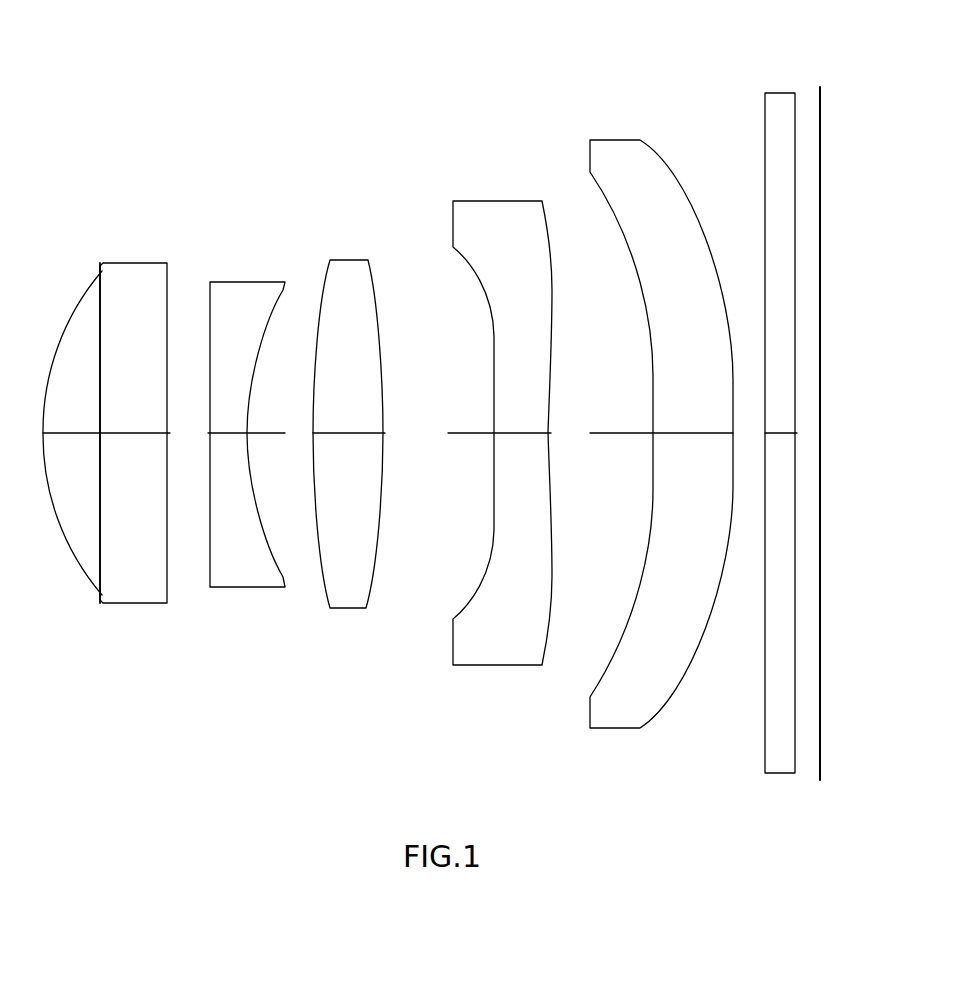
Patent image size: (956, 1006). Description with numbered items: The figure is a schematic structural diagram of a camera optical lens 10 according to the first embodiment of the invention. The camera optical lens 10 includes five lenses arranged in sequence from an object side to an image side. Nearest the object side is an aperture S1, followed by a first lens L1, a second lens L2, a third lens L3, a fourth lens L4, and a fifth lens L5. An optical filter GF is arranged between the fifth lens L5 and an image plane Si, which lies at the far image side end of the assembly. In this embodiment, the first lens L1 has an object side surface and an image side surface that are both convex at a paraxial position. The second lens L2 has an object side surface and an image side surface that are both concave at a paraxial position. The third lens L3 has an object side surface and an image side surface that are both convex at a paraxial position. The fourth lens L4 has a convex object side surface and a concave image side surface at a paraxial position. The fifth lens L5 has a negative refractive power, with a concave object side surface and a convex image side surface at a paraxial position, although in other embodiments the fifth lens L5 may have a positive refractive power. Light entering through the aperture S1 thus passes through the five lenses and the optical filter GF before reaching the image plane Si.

The camera optical lens 10 is at (453, 31).
The aperture S1 is at (107, 421).
The first lens L1 is at (106, 421).
The second lens L2 is at (246, 421).
The third lens L3 is at (349, 421).
The fourth lens L4 is at (500, 418).
The fifth lens L5 is at (661, 419).
The optical filter GF is at (781, 421).
The image plane Si is at (824, 420).